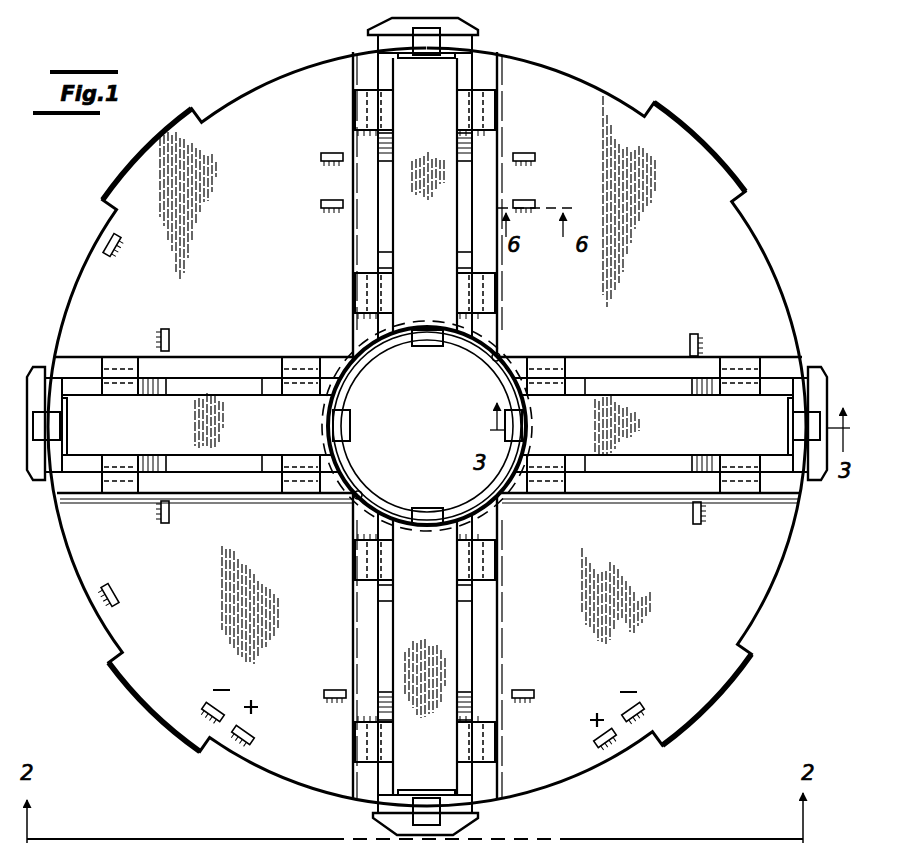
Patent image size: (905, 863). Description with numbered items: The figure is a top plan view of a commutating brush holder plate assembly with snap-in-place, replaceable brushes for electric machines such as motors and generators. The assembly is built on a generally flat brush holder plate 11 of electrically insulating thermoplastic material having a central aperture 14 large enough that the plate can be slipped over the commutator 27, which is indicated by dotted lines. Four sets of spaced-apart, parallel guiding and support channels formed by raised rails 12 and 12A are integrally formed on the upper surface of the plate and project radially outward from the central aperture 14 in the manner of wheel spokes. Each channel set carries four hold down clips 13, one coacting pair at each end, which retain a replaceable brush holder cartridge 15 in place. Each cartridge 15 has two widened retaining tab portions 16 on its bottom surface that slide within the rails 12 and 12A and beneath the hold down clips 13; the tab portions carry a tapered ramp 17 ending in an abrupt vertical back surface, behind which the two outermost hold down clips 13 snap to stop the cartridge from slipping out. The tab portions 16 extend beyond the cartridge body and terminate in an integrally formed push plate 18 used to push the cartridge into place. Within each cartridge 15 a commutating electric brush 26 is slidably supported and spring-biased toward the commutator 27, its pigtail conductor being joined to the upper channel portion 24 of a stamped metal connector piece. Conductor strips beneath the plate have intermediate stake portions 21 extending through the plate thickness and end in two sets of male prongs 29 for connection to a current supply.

The brush holder plate 11 is at (599, 74).
The raised rail 12 is at (492, 73).
The raised rail 12A is at (356, 254).
The hold down clip 13 is at (455, 108).
The central aperture 14 is at (499, 353).
The brush holder cartridge 15 is at (405, 74).
The widened retaining tab portion 16 is at (457, 226).
The tapered ramp 17 is at (457, 151).
The push plate 18 is at (478, 32).
The intermediate stake portion 21 is at (322, 203).
The upper channel portion 24 is at (450, 40).
The commutating electric brush 26 is at (350, 425).
The commutator 27 is at (460, 352).
The male prong 29 is at (243, 740).